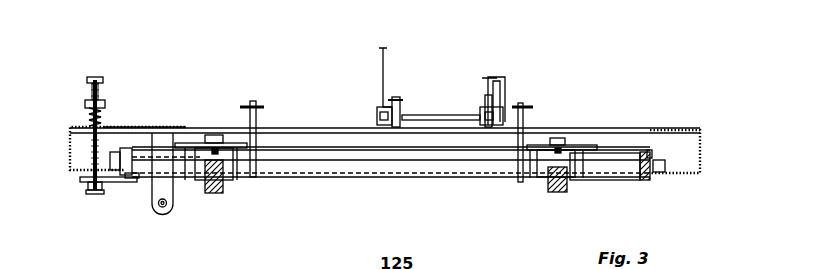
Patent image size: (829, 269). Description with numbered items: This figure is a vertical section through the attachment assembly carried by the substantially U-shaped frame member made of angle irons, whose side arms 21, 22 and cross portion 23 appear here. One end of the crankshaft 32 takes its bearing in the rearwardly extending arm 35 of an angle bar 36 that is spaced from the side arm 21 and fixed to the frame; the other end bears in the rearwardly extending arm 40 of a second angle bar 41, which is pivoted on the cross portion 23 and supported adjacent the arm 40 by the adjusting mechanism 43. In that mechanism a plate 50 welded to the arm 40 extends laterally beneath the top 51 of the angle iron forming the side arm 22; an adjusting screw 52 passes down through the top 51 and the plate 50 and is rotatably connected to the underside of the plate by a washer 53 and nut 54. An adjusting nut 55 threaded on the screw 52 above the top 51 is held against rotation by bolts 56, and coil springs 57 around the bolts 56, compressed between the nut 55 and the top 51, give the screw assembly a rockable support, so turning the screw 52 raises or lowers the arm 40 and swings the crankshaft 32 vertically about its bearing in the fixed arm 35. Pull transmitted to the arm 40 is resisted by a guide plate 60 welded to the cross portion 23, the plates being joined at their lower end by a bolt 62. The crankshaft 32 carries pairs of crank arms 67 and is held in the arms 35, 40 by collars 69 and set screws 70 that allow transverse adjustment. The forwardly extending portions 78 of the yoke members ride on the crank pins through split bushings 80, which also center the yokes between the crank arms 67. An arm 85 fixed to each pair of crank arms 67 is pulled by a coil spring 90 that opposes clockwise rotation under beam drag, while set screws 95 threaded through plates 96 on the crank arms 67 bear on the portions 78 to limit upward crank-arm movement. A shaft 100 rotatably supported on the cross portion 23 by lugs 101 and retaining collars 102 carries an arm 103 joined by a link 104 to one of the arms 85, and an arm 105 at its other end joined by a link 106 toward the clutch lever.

The side arm 21 is at (700, 152).
The side arm 22 is at (70, 140).
The cross portion 23 is at (308, 128).
The crankshaft 32 is at (398, 165).
The rearwardly extending arm 35 is at (645, 180).
The angle bar 36 is at (622, 180).
The rearwardly extending arm 40 is at (128, 148).
The second angle bar 41 is at (132, 178).
The adjusting mechanism 43 is at (95, 77).
The plate 50 is at (110, 182).
The top of the angle iron 51 is at (110, 127).
The adjusting screw 52 is at (88, 80).
The washer 53 is at (80, 180).
The nut 54 is at (90, 188).
The adjusting nut 55 is at (85, 103).
The bolts 56 is at (98, 90).
The coil springs 57 is at (89, 115).
The guide plate 60 is at (156, 208).
The bolt 62 is at (163, 208).
The crank arms 67 is at (186, 180).
The collars 69 is at (90, 155).
The set screws 70 is at (115, 152).
The forwardly extending portions 78 is at (222, 193).
The split bushing 80 is at (212, 182).
The arm 85 is at (258, 118).
The coil spring 90 is at (256, 105).
The set screws 95 is at (215, 135).
The plates 96 is at (188, 143).
The shaft 100 is at (432, 115).
The lugs 101 is at (396, 127).
The retaining collars 102 is at (377, 112).
The arm 103 is at (488, 88).
The link 104 is at (503, 80).
The arm 105 is at (398, 100).
The link 106 is at (385, 58).